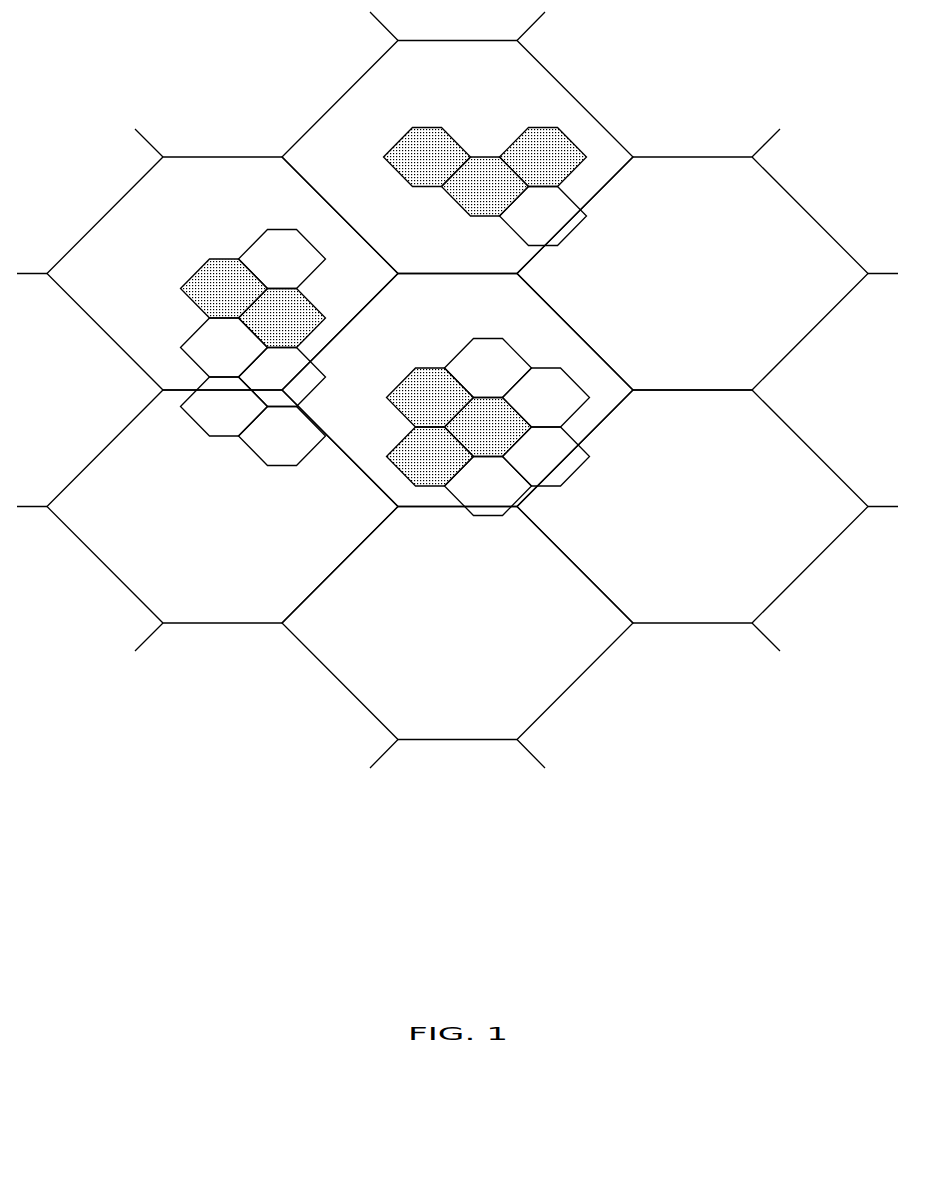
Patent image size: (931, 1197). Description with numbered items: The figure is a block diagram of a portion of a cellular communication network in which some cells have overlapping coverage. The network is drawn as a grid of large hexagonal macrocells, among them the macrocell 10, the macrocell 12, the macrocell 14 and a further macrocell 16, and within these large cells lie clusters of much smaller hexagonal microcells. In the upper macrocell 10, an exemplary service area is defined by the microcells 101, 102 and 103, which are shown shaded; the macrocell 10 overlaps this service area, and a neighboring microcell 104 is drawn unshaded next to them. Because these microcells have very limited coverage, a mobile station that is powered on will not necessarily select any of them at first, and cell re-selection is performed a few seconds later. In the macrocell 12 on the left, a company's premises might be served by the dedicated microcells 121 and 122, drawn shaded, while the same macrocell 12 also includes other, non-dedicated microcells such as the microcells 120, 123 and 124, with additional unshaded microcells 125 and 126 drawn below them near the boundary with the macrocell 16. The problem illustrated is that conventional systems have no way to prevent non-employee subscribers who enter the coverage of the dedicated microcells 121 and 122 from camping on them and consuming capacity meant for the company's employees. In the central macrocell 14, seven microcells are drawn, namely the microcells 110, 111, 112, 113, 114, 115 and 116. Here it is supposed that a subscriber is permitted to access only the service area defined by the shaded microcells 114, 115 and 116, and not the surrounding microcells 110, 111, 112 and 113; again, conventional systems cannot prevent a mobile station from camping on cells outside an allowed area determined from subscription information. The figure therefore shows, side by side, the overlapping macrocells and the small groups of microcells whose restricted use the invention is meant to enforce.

The macrocell 10 is at (457, 157).
The macrocell 12 is at (222, 273).
The macrocell 14 is at (457, 390).
The cell 16 is at (222, 506).
The microcell 101 is at (427, 157).
The microcell 102 is at (485, 186).
The microcell 103 is at (543, 157).
The sub-cell 104 is at (543, 216).
The microcell 110 is at (488, 368).
The microcell 111 is at (546, 397).
The microcell 112 is at (546, 456).
The microcell 113 is at (488, 486).
The microcell 114 is at (430, 456).
The microcell 115 is at (430, 397).
The microcell 116 is at (488, 427).
The microcell 120 is at (282, 259).
The dedicated microcell 121 is at (224, 288).
The dedicated microcell 122 is at (282, 318).
The microcell 123 is at (224, 347).
The microcell 124 is at (282, 377).
The sub-cell 125 is at (224, 406).
The sub-cell 126 is at (282, 436).